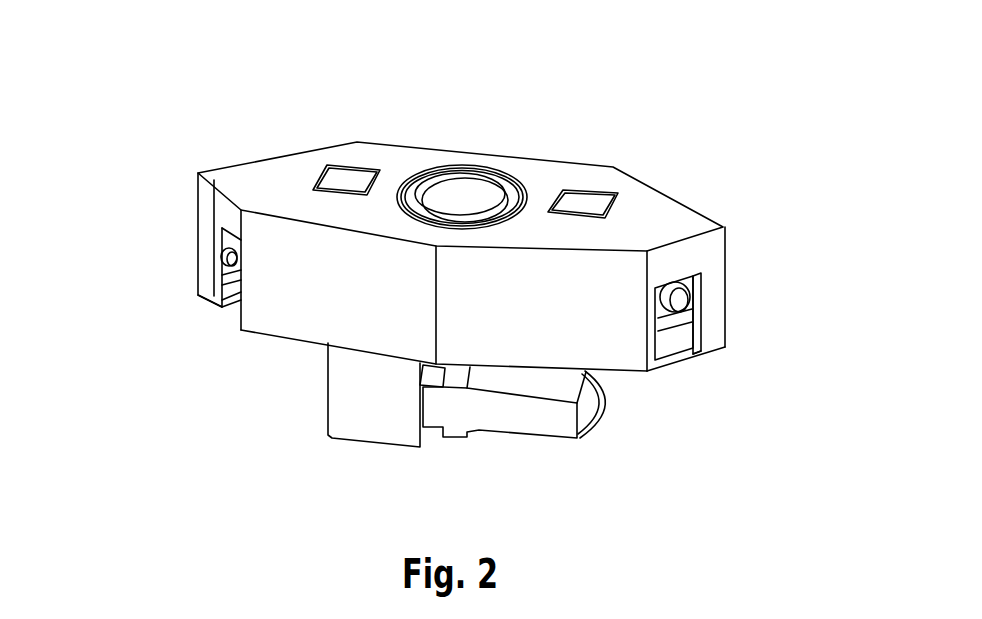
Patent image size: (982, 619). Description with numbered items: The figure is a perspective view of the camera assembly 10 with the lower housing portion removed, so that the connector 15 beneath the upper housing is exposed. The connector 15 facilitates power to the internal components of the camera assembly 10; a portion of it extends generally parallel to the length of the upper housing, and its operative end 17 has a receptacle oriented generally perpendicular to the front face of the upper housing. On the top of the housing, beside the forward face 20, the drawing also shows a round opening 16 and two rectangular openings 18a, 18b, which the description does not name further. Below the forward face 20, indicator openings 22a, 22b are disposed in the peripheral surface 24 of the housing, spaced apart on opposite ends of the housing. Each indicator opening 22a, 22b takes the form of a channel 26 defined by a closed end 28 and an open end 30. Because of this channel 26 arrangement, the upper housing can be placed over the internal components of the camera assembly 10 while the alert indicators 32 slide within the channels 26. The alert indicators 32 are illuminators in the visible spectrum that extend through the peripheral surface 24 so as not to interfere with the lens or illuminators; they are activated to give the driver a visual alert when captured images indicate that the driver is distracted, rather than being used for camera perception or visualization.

The camera assembly 10 is at (676, 118).
The connector 15 is at (492, 443).
The circular opening 16 is at (507, 160).
The operative end 17 is at (606, 426).
The first rectangular opening 18a is at (350, 160).
The second rectangular opening 18b is at (599, 190).
The forward face 20 is at (555, 175).
The indicator opening 22a is at (190, 236).
The indicator opening 22b is at (705, 289).
The peripheral surface 24 is at (725, 242).
The channel 26 is at (232, 322).
The closed end 28 is at (220, 230).
The open end 30 is at (232, 312).
The alert indicator 32 is at (227, 256).